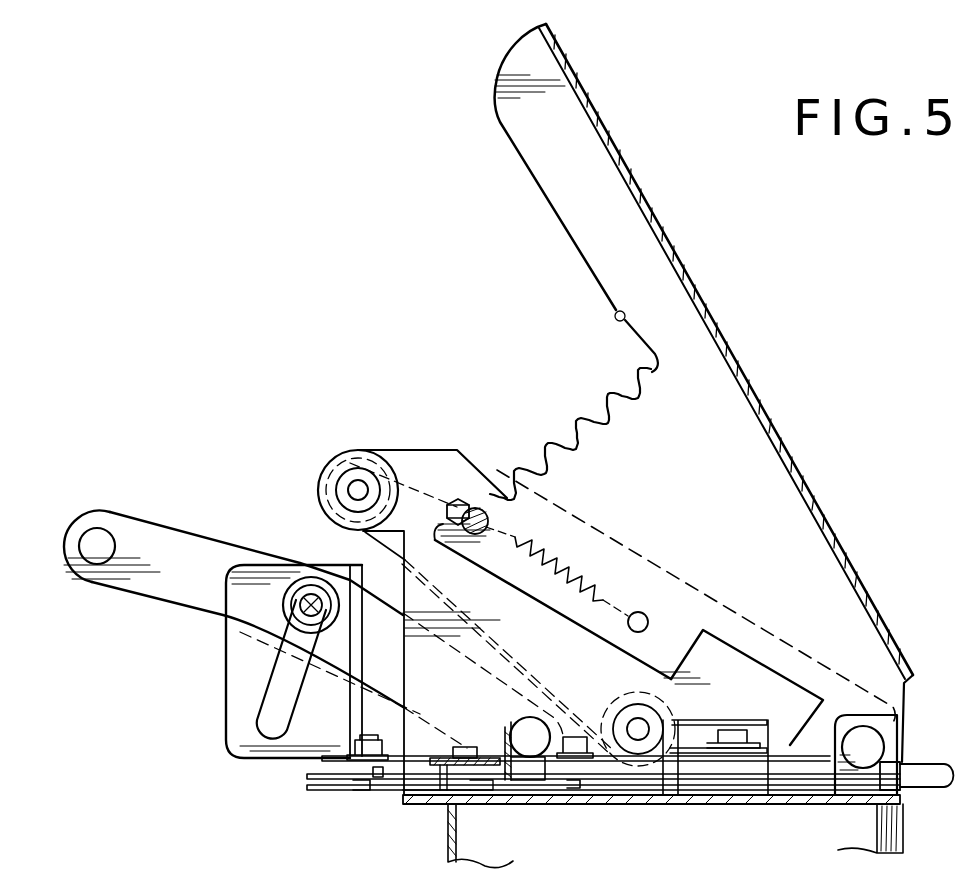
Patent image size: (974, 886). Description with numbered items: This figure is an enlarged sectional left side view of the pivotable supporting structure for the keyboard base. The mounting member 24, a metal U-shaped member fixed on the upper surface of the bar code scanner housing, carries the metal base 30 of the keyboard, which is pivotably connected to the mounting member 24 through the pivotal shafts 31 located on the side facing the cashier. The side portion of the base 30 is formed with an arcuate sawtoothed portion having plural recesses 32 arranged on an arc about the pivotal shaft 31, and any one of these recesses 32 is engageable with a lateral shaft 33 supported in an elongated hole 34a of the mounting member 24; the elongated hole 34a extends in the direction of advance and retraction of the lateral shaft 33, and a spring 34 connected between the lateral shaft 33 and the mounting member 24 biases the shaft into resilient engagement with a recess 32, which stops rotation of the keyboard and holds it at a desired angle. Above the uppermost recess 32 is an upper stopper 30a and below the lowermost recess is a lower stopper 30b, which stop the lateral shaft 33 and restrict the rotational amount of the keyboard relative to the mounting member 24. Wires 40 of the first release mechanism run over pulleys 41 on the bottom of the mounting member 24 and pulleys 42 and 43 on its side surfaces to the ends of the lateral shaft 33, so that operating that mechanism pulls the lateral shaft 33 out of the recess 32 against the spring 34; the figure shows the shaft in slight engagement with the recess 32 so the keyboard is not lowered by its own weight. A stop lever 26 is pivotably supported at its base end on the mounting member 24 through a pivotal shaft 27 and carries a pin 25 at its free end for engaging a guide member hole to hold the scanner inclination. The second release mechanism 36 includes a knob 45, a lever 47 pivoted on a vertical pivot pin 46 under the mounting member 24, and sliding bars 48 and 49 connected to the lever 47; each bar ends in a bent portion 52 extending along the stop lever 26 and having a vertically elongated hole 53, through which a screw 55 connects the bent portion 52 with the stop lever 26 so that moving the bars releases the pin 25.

The base 30 is at (577, 118).
The upper stopper 30a is at (632, 320).
The lower stopper 30b is at (417, 490).
The recesses 32 is at (553, 400).
The lateral shaft 33 is at (477, 508).
The springs 34 is at (600, 587).
The elongated holes 34a is at (458, 500).
The pulleys 43 is at (322, 478).
The wires 40 is at (363, 537).
The pulleys 41 is at (770, 740).
The pivotal shafts 31 is at (868, 738).
The knob 45 is at (935, 790).
The mounting member 24 is at (592, 804).
The second release mechanism 36 is at (702, 804).
The pulleys 42 is at (672, 797).
The lever 47 is at (765, 778).
The pivotal shafts 27 is at (530, 750).
The vertical pivot pin 46 is at (467, 768).
The sliding bar 49 is at (443, 797).
The sliding bar 48 is at (363, 765).
The stop levers 26 is at (188, 550).
The pin 25 is at (100, 530).
The bent portion 52 is at (240, 654).
The screw 55 is at (303, 592).
The elongated hole 53 is at (265, 706).